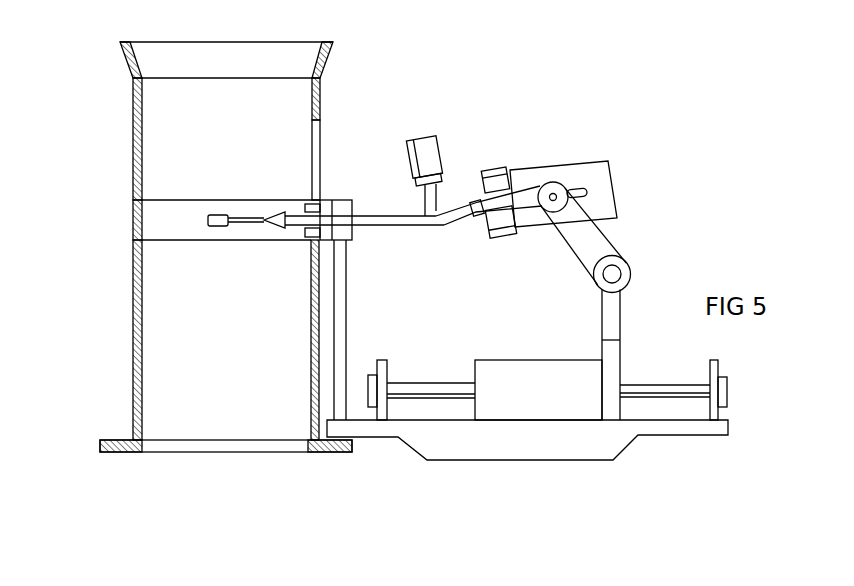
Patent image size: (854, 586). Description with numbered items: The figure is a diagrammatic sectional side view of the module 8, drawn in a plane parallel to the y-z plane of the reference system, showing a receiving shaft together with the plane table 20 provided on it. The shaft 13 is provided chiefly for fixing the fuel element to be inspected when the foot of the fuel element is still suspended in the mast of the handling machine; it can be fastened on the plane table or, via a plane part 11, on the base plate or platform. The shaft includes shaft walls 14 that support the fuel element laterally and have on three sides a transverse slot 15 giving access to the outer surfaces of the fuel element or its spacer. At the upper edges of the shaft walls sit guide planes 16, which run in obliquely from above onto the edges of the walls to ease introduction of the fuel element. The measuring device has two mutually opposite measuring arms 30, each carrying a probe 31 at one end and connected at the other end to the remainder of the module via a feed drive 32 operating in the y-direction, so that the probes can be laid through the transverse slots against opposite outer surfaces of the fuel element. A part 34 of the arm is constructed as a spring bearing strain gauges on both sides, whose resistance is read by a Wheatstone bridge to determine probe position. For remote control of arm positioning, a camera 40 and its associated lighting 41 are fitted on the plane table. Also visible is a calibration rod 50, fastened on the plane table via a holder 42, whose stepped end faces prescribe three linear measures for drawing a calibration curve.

The module 8 is at (128, 458).
The plane part 11 is at (337, 453).
The shaft 13 is at (135, 352).
The shaft walls 14 is at (133, 127).
The transverse slot 15 is at (150, 223).
The guide planes 16 is at (123, 60).
The plane table 20 is at (615, 442).
The measuring arms 30 is at (387, 222).
The probe 31 is at (214, 227).
The feed drive 32 is at (532, 372).
The part of the arm 34 is at (277, 212).
The camera 40 is at (590, 170).
The lighting 41 is at (447, 153).
The holder 42 is at (342, 328).
The calibration rod 50 is at (330, 201).